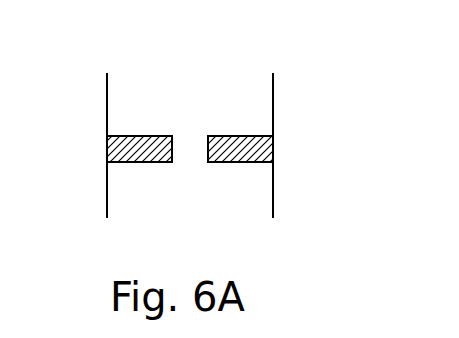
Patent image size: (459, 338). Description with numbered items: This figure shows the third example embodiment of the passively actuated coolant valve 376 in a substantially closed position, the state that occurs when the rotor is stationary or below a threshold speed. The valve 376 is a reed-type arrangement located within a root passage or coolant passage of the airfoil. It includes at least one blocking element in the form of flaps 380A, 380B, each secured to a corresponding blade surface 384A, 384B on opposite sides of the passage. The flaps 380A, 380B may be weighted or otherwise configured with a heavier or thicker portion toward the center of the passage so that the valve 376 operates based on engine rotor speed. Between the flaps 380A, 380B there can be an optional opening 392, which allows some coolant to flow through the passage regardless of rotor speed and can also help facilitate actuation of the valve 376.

The flap 380A is at (107, 111).
The flap 380B is at (273, 115).
The blade surface 384A is at (155, 136).
The blade surface 384B is at (250, 136).
The passively actuated coolant valve 376 is at (157, 155).
The opening 392 is at (190, 147).